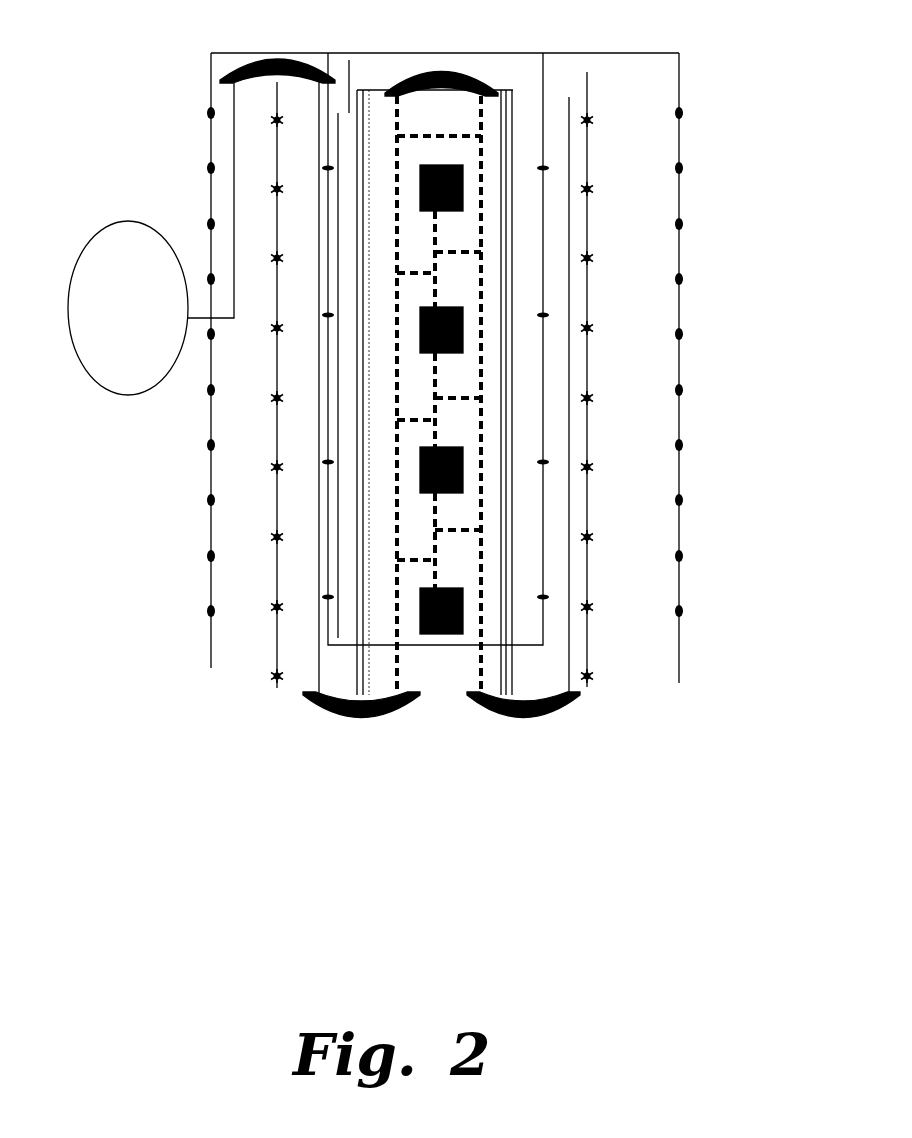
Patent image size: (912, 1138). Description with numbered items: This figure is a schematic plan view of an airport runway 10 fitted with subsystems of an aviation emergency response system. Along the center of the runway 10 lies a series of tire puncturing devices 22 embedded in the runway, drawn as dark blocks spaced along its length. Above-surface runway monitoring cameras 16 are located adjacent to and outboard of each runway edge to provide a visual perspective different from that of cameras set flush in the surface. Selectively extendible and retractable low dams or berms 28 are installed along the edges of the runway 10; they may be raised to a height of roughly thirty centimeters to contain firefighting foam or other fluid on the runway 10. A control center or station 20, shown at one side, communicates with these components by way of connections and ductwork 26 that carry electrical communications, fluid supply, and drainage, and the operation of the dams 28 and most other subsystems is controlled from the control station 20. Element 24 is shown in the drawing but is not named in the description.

The runway 10 is at (467, 695).
The above-surface runway monitoring cameras 16 is at (205, 453).
The control center or station 20 is at (142, 323).
The tire puncturing devices 22 is at (463, 188).
The light emitting elements 24 is at (270, 402).
The connections and ductwork 26 is at (396, 158).
The low dams or berms 28 is at (362, 510).